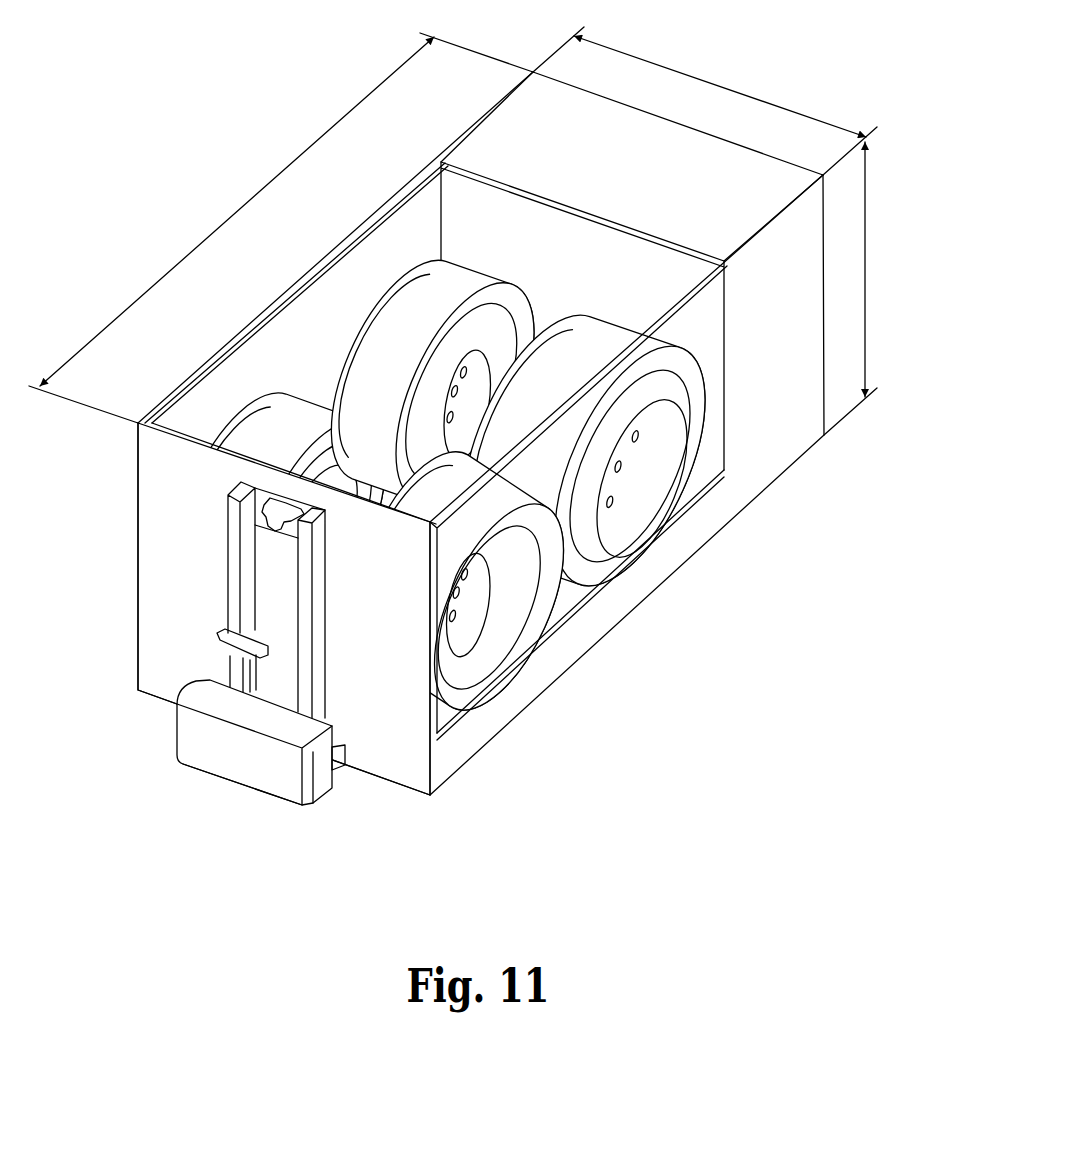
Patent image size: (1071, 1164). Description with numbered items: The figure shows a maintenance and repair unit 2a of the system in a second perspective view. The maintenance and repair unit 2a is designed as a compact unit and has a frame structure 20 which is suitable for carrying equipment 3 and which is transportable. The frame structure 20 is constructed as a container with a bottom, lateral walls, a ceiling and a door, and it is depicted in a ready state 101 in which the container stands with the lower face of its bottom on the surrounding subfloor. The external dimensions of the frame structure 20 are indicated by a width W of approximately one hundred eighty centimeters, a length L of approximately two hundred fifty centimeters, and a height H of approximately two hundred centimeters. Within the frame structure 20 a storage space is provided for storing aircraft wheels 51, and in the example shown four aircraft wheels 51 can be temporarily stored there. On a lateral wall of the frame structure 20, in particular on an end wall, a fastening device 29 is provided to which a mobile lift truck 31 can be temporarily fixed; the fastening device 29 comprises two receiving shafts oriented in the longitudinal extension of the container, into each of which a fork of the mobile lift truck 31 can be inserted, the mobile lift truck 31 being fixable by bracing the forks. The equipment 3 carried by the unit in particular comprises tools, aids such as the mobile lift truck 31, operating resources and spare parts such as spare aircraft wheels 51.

The frame structure 20 is at (494, 445).
The maintenance and repair unit 2a is at (843, 458).
The equipment 3 is at (208, 680).
The mobile lift truck 31 is at (228, 758).
The fastening device 29 is at (347, 783).
The aircraft wheels 51 is at (380, 322).
The ready state 101 is at (570, 752).
The length L is at (238, 207).
The width W is at (722, 84).
The height H is at (868, 268).